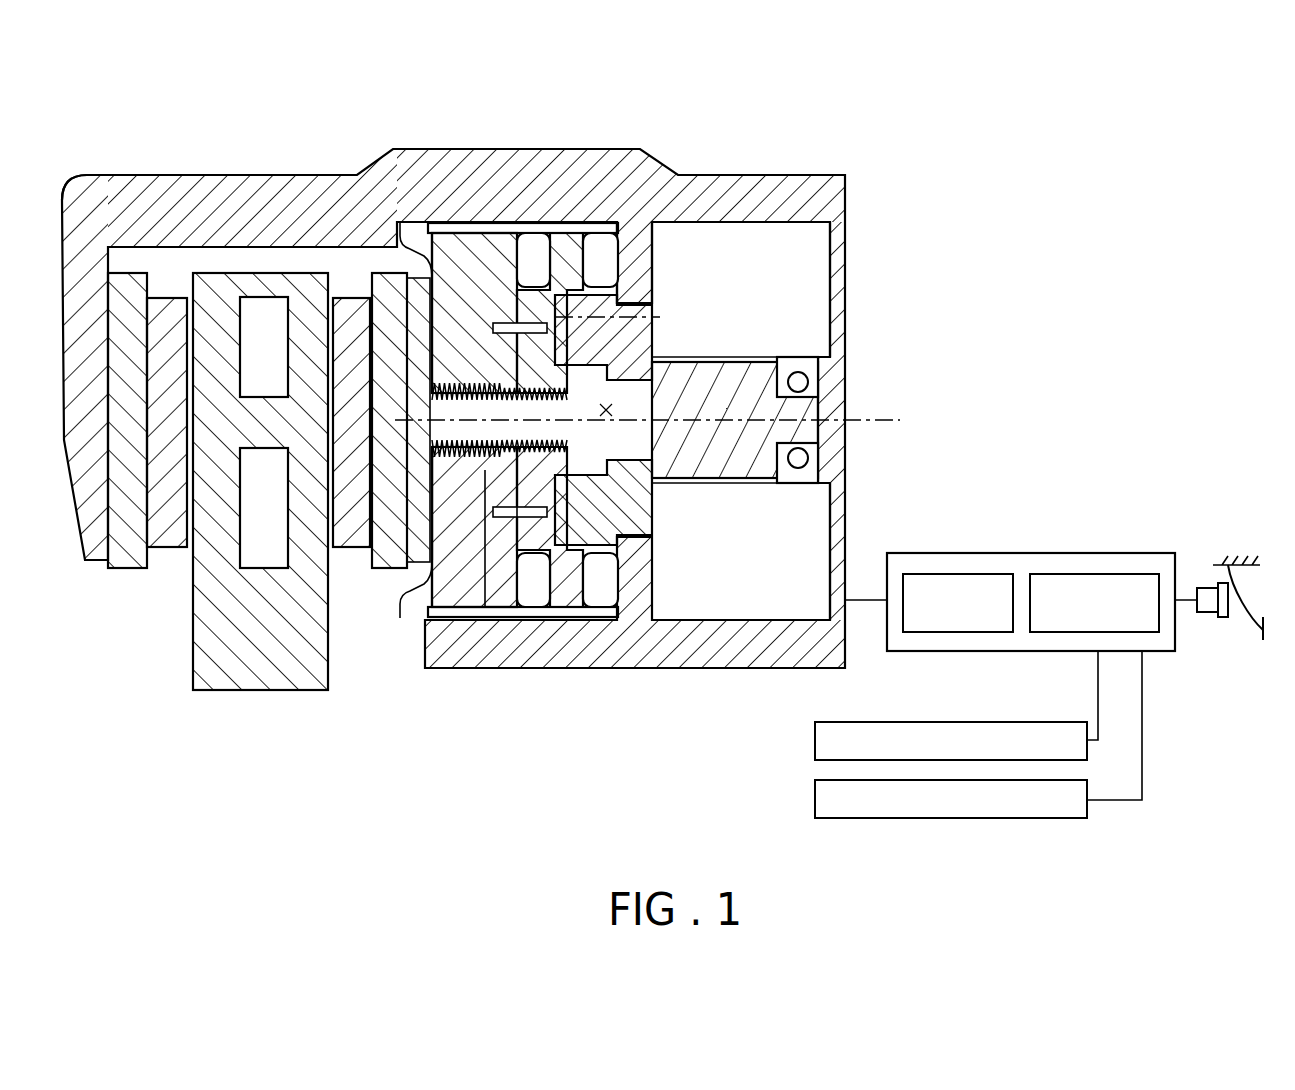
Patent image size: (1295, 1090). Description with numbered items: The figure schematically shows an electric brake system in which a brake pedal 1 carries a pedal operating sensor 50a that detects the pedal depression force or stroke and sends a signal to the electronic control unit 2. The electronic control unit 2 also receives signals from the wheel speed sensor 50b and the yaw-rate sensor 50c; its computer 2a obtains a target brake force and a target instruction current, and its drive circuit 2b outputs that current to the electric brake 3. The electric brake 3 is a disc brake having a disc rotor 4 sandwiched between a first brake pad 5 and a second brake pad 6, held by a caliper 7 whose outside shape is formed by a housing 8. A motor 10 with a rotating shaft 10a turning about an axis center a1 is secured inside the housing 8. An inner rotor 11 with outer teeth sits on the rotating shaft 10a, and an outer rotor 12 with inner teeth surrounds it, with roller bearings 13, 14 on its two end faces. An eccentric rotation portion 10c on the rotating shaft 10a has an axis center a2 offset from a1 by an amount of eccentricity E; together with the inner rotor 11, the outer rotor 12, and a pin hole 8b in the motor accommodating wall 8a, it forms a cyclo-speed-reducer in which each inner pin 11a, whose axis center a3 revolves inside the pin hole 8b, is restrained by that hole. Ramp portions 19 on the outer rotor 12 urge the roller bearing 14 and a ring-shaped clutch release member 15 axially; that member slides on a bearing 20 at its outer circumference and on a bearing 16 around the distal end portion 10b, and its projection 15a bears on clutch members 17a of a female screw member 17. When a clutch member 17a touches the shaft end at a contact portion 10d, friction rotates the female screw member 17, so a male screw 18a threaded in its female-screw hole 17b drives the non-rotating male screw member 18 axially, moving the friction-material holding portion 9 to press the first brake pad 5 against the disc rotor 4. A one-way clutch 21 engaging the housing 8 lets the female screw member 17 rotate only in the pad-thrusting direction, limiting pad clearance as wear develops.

The brake pedal 1 is at (1266, 642).
The electronic control unit 2 is at (1075, 653).
The computer 2a is at (1080, 575).
The drive circuit 2b is at (985, 575).
The electric brake 3 is at (869, 156).
The disc rotor 4 is at (227, 610).
The first brake pad 5 is at (347, 297).
The second brake pad 6 is at (167, 297).
The caliper 7 is at (67, 185).
The housing 8 is at (110, 207).
The motor accommodating wall 8a is at (642, 243).
The pin hole 8b is at (655, 345).
The friction-material holding portion 9 is at (392, 297).
The motor 10 is at (768, 598).
The rotating shaft 10a is at (810, 452).
The distal end portion 10b is at (535, 530).
The eccentric rotation portion 10c is at (820, 390).
The contact portion 10d is at (482, 520).
The inner rotor 11 is at (640, 340).
The inner pin 11a is at (655, 293).
The outer rotor 12 is at (563, 228).
The roller bearing 13 is at (600, 245).
The roller bearing 14 is at (537, 245).
The clutch release member 15 is at (500, 290).
The projection 15a is at (488, 252).
The bearing 16 is at (514, 300).
The female screw member 17 is at (423, 308).
The clutch member 17a is at (448, 500).
The female-screw hole 17b is at (436, 472).
The male screw member 18 is at (415, 300).
The male screw 18a is at (405, 440).
The ramp portion 19 is at (565, 592).
The bearing 20 is at (632, 268).
The one-way clutch 21 is at (407, 208).
The pedal operating sensor 50a is at (1223, 620).
The wheel speed sensor 50b is at (808, 740).
The yaw-rate sensor 50c is at (808, 798).
The amount of eccentricity E is at (655, 497).
The axis center a1 is at (882, 422).
The axis center a2 is at (620, 410).
The axis center a3 is at (655, 318).